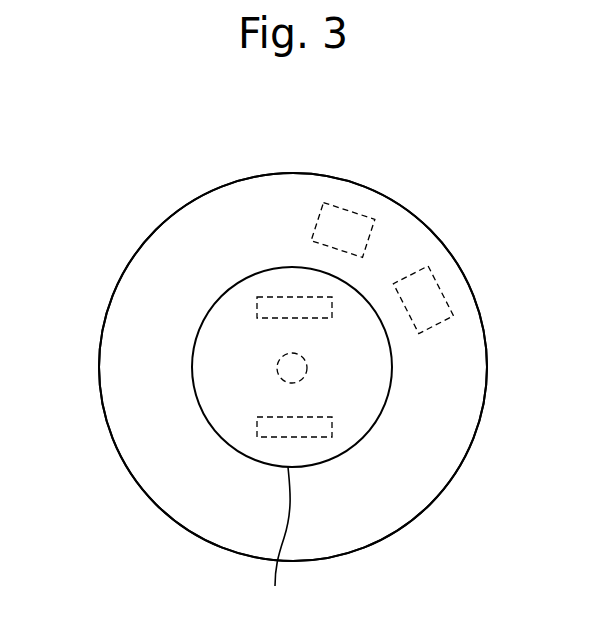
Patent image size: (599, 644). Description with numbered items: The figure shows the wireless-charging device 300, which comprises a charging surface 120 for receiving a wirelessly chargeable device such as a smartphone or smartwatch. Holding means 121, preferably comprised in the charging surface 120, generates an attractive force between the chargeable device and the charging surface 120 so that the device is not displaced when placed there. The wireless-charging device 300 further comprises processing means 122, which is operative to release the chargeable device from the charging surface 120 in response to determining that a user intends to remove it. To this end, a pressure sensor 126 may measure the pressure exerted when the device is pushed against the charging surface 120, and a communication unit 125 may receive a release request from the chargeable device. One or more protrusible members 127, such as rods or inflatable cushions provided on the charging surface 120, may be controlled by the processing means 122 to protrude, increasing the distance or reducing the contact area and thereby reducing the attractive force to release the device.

The wireless-charging device 300 is at (153, 170).
The charging surface 120 is at (184, 528).
The holding means 121 is at (292, 444).
The communication unit 125 is at (348, 220).
The processing means 122 is at (431, 293).
The pressure sensor 126 is at (307, 366).
The protrusible members 127 is at (258, 307).